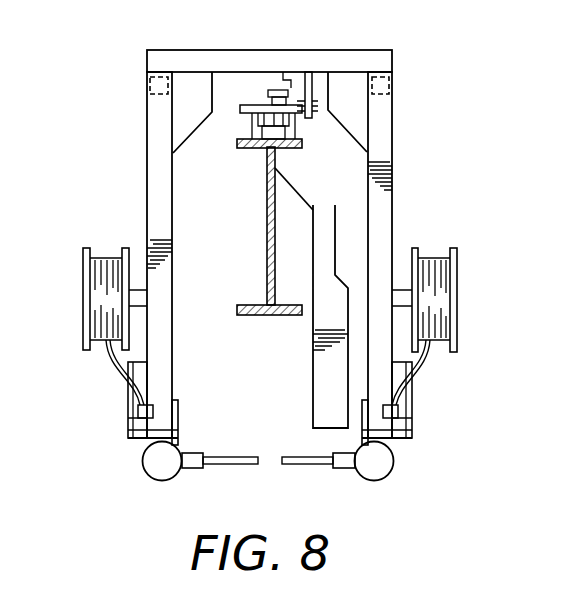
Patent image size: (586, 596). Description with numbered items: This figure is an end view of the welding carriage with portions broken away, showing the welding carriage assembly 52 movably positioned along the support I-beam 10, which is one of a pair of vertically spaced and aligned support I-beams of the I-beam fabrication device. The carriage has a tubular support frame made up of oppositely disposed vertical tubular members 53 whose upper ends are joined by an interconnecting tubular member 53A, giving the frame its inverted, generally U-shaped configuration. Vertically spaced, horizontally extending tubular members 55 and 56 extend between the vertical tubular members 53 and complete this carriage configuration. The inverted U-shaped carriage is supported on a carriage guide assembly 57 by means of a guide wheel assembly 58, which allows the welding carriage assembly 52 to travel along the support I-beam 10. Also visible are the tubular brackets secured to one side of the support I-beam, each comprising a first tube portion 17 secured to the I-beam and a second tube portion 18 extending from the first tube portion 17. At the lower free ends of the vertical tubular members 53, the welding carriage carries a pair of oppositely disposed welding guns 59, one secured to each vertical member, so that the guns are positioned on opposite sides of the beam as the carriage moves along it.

The support I-beam 10 is at (265, 222).
The first tube portion 17 is at (298, 213).
The second tube portion 18 is at (320, 282).
The welding carriage assembly 52 is at (280, 255).
The vertical tubular members 53 is at (158, 180).
The interconnecting tubular member 53A is at (256, 65).
The horizontally extending tubular member 55 is at (390, 88).
The horizontally extending tubular member 56 is at (150, 92).
The carriage guide assembly 57 is at (247, 130).
The guide wheel assembly 58 is at (312, 120).
The welding guns 59 is at (158, 467).